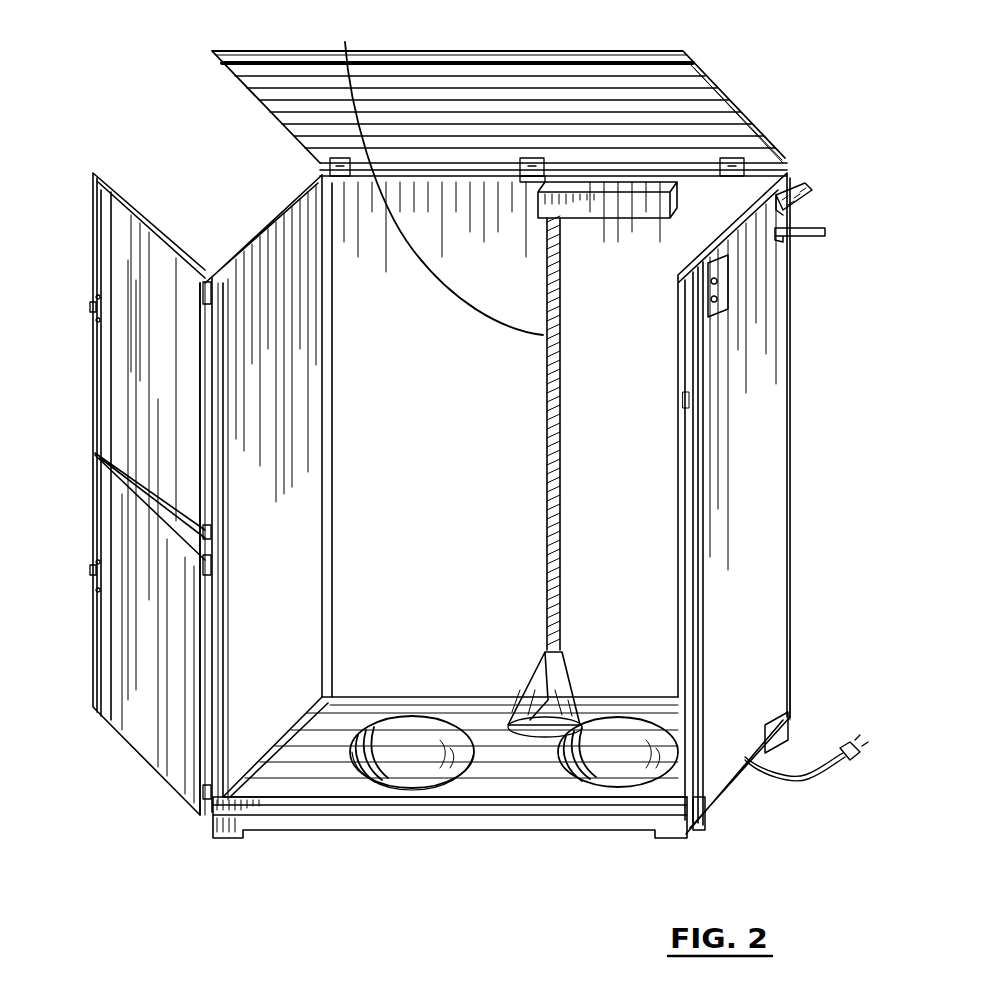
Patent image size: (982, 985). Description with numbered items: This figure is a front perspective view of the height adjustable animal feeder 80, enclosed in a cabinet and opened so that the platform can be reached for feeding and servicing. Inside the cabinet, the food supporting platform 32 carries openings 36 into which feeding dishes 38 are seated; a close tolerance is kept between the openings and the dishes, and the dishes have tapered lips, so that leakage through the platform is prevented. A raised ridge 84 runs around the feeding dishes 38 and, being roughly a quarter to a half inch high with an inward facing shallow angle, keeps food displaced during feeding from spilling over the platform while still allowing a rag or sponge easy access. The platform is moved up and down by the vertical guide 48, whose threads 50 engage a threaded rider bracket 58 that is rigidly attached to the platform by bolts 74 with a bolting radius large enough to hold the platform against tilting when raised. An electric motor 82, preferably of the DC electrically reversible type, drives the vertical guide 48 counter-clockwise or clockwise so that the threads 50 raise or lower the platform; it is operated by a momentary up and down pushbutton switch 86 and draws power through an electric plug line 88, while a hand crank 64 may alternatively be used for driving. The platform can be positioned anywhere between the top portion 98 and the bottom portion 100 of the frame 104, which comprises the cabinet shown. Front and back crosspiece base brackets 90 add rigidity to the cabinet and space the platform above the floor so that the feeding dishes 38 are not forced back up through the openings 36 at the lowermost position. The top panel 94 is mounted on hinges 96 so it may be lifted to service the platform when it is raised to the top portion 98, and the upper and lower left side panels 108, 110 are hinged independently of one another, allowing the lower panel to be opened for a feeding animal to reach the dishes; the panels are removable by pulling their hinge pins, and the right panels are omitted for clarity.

The food supporting platform 32 is at (295, 775).
The openings 36 is at (432, 790).
The feeding dishes 38 is at (405, 765).
The vertical guide 48 is at (547, 277).
The threads 50 is at (437, 173).
The threaded rider bracket 58 is at (660, 708).
The hand crank 64 is at (820, 230).
The bolts 74 is at (545, 745).
The height adjustable animal feeder 80 is at (792, 146).
The electric motor 82 is at (583, 192).
The raised ridge 84 is at (510, 797).
The pushbutton switch 86 is at (722, 288).
The electric plug line 88 is at (848, 762).
The crosspiece base brackets 90 is at (790, 718).
The top panel 94 is at (212, 54).
The hinges 96 is at (727, 162).
The top portion of frame 98 is at (790, 185).
The bottom portion of frame 100 is at (792, 642).
The frame 104 is at (285, 218).
The upper left side panel 108 is at (108, 193).
The lower left side panel 110 is at (112, 645).